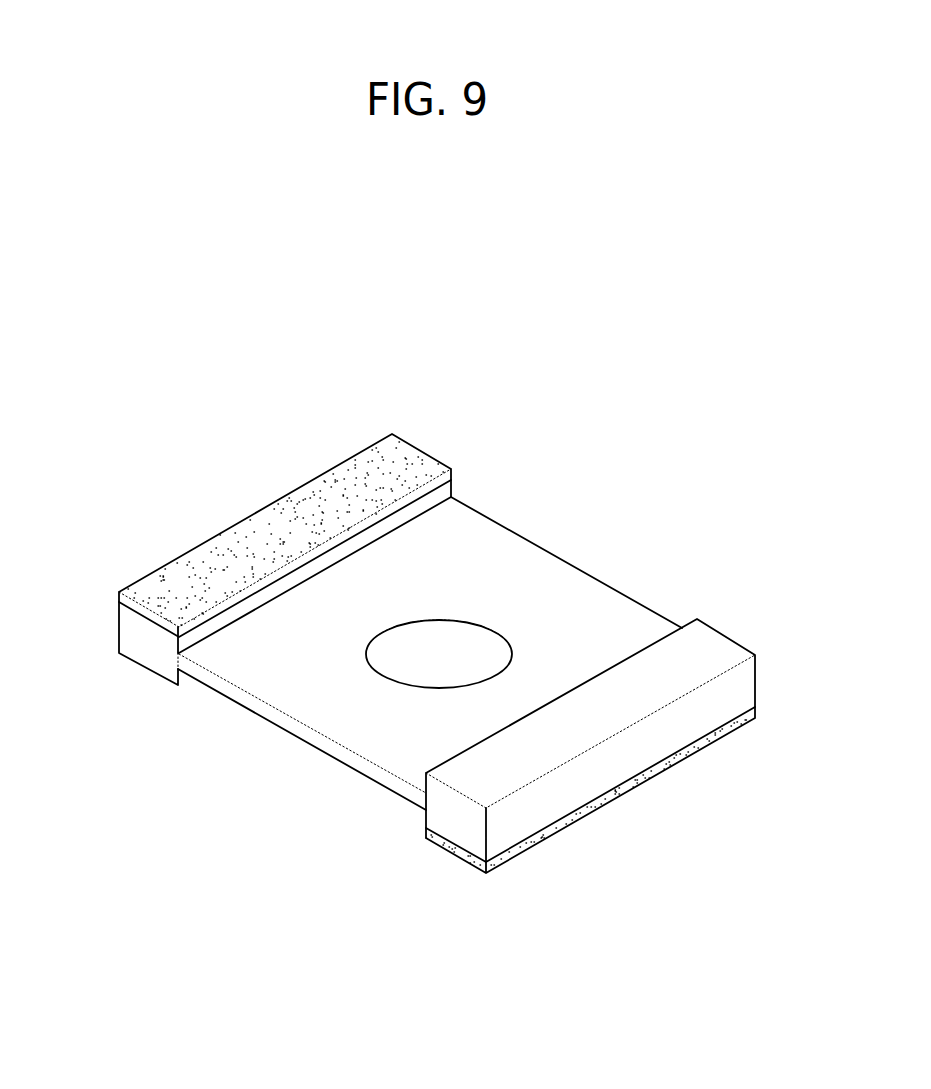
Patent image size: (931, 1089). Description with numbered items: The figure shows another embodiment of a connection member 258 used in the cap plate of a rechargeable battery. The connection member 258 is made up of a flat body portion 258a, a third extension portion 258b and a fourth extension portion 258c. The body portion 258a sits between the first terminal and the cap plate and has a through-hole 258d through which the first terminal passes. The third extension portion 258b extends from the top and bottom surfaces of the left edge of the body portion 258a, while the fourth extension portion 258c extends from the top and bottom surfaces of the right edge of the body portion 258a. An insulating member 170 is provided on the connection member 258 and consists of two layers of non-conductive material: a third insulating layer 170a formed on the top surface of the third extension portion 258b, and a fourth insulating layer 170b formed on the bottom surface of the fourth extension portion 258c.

The connection member 258 is at (432, 653).
The body portion 258a is at (560, 573).
The third extension portion 258b is at (135, 636).
The fourth extension portion 258c is at (748, 682).
The through-hole 258d is at (450, 650).
The insulating member 170 is at (437, 655).
The third insulating layer 170a is at (360, 480).
The fourth insulating layer 170b is at (457, 848).